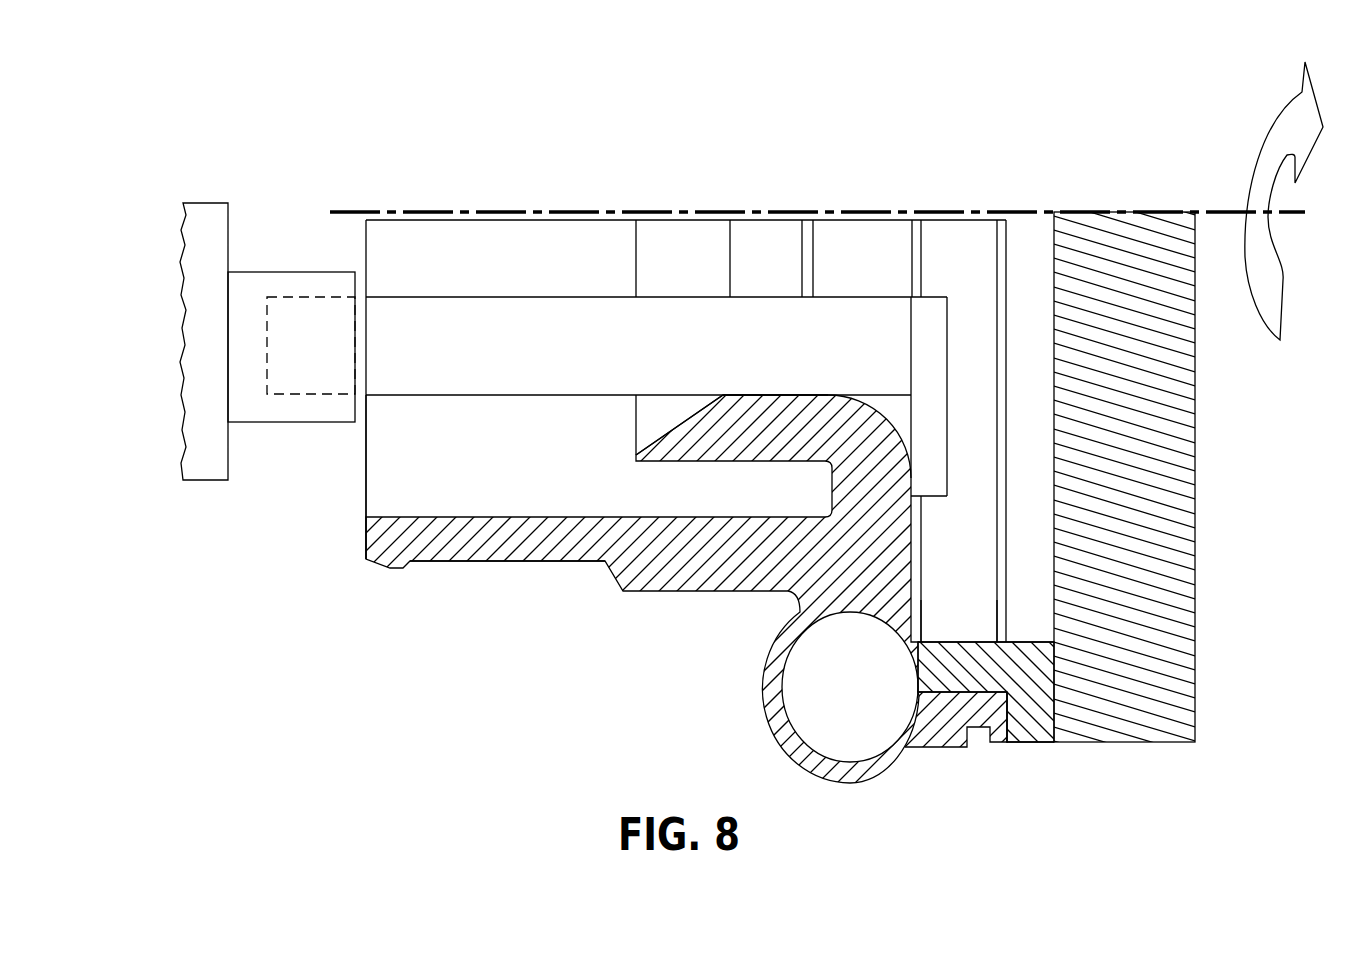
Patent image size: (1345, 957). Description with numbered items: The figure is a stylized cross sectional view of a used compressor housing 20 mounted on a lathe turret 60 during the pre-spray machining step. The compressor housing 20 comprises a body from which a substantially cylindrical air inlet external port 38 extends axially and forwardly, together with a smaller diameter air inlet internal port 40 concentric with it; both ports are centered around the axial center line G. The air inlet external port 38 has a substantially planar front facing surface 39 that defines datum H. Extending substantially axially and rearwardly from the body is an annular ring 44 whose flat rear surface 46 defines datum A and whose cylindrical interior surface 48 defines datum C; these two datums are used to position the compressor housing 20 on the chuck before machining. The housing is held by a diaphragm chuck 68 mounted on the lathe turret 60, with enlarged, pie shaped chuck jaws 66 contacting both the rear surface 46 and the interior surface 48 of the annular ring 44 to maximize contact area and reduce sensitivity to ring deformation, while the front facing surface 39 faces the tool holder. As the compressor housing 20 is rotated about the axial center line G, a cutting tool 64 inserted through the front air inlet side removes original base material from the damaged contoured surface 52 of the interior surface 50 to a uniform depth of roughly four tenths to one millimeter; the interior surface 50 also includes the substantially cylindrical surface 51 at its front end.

The axial center line G is at (383, 212).
The datum A is at (1008, 240).
The datum H is at (366, 443).
The datum C is at (1022, 658).
The compressor housing 20 is at (670, 609).
The air inlet external port 38 is at (465, 560).
The front facing surface 39 is at (366, 542).
The air inlet internal port 40 is at (637, 455).
The annular ring 44 is at (976, 708).
The rear surface 46 is at (1012, 716).
The interior surface 48 is at (962, 665).
The interior surface 50 is at (893, 424).
The cylindrical surface 51 is at (765, 395).
The contoured surface 52 is at (911, 470).
The lathe turret 60 is at (1110, 718).
The cutting tool 64 is at (607, 300).
The chuck jaws 66 is at (939, 692).
The diaphragm chuck 68 is at (1033, 726).